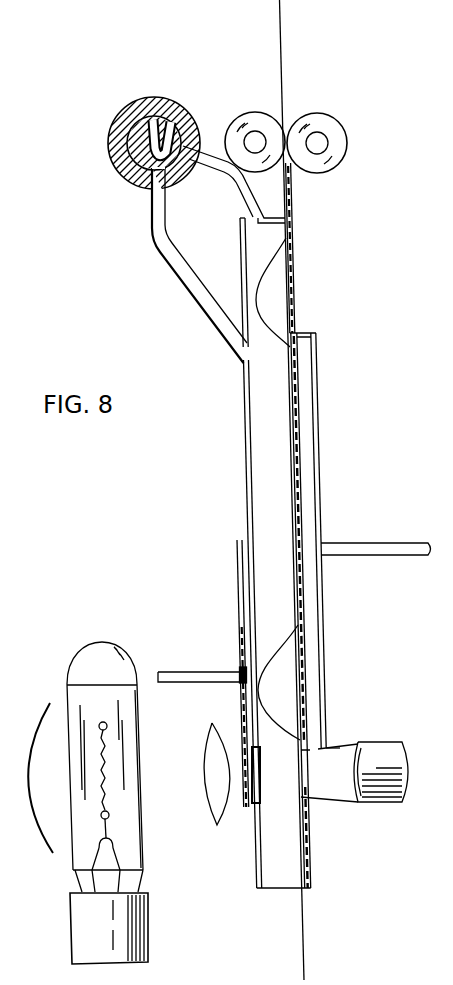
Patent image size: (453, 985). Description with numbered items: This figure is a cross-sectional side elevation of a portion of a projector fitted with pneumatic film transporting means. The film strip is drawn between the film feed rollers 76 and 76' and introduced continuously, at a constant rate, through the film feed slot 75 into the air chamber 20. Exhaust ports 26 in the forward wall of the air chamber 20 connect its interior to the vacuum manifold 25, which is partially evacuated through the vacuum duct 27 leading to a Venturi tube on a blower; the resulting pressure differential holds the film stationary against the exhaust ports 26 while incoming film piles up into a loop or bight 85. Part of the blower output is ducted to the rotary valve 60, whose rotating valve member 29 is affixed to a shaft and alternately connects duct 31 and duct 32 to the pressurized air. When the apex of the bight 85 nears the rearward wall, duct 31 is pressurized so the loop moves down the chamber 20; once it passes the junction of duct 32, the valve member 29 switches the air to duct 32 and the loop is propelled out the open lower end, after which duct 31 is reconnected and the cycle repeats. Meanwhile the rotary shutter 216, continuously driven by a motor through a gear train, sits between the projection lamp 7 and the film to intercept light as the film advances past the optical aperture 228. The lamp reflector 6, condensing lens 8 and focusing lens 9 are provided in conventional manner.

The rotary air valve 60 is at (157, 99).
The rotary valve member 29 is at (137, 165).
The duct 32 is at (169, 270).
The duct 31 is at (235, 190).
The film feed roller 76 is at (255, 130).
The film feed roller 76' is at (317, 128).
The film feed slot 75 is at (292, 188).
The film loop (bight) 85 is at (289, 268).
The exhaust ports 26 is at (294, 400).
The air chamber 20 is at (258, 427).
The vacuum manifold 25 is at (306, 470).
The vacuum duct 27 is at (360, 543).
The rotary shutter 216 is at (238, 587).
The optical aperture 228 is at (302, 776).
The focusing lens 9 is at (393, 803).
The condensing lens 8 is at (216, 820).
The lamp reflector 6 is at (46, 832).
The projection lamp 7 is at (135, 861).